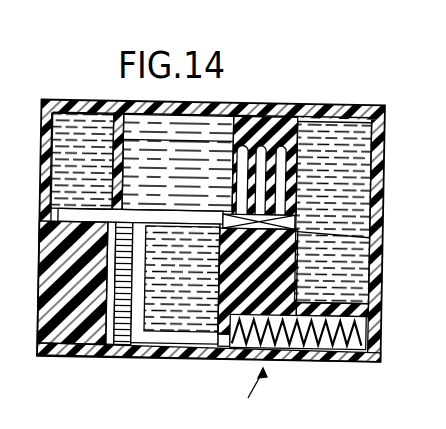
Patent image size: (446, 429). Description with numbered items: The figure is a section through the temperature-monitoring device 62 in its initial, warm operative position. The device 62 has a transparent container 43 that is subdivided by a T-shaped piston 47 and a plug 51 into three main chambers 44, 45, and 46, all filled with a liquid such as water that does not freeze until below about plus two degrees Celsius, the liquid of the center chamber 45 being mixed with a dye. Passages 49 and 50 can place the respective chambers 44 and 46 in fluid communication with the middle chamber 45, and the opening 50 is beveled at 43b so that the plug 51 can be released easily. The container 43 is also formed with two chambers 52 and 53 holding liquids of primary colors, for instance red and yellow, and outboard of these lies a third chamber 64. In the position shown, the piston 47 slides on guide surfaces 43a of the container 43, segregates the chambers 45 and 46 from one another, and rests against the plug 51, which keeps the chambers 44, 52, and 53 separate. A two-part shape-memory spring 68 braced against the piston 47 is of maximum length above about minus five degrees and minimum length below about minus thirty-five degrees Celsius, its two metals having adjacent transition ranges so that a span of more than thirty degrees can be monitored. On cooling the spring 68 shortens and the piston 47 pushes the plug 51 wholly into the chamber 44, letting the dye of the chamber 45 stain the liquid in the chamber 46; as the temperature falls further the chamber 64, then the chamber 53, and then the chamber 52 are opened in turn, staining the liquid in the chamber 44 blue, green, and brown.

The transparent container 43 is at (65, 347).
The guide surfaces 43a is at (110, 346).
The bevel 43b is at (297, 232).
The chamber 44 is at (341, 147).
The center chamber 45 is at (134, 138).
The chamber 46 is at (77, 128).
The T-shaped piston 47 is at (214, 344).
The passage 49 is at (299, 222).
The opening 50 is at (86, 348).
The plug 51 is at (323, 233).
The chamber 52 is at (248, 142).
The chamber 53 is at (262, 143).
The device 62 is at (251, 396).
The third chamber 64 is at (282, 143).
The two-part shape-memory spring 68 is at (311, 359).